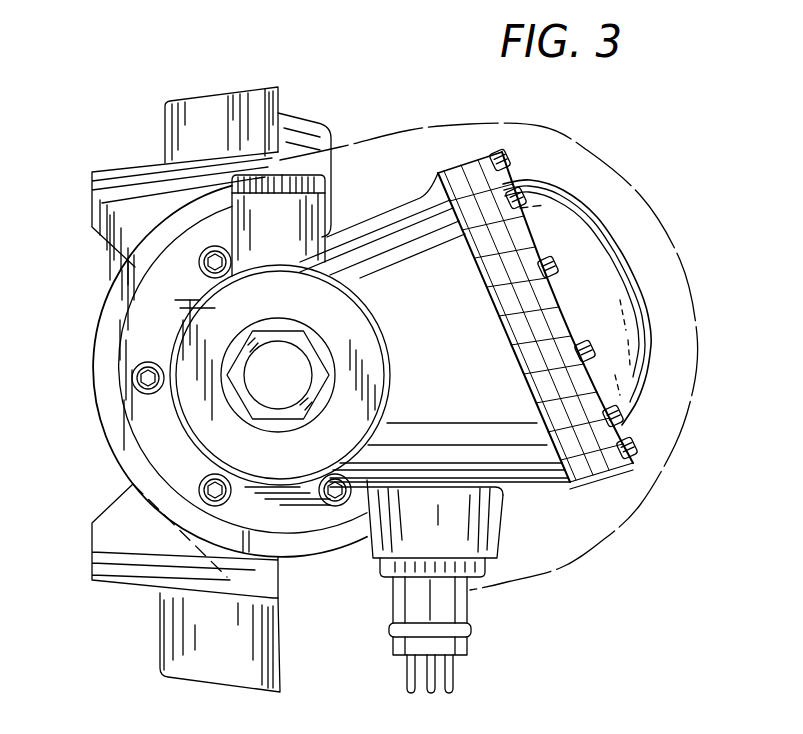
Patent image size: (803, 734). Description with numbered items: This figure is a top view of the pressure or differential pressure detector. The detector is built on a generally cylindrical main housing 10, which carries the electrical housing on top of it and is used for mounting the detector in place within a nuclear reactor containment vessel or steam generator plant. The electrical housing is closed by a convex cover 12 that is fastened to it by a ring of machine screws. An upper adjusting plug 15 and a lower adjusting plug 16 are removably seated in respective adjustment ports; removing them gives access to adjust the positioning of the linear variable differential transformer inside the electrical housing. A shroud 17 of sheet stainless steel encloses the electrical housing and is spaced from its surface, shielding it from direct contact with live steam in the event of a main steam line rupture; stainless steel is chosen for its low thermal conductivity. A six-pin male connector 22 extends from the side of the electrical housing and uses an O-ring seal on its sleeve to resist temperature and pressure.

The main housing 10 is at (95, 549).
The convex cover 12 is at (598, 255).
The upper adjusting plug 15 is at (300, 340).
The lower adjusting plug 16 is at (296, 172).
The shroud 17 is at (588, 152).
The six-pin male connector 22 is at (462, 612).